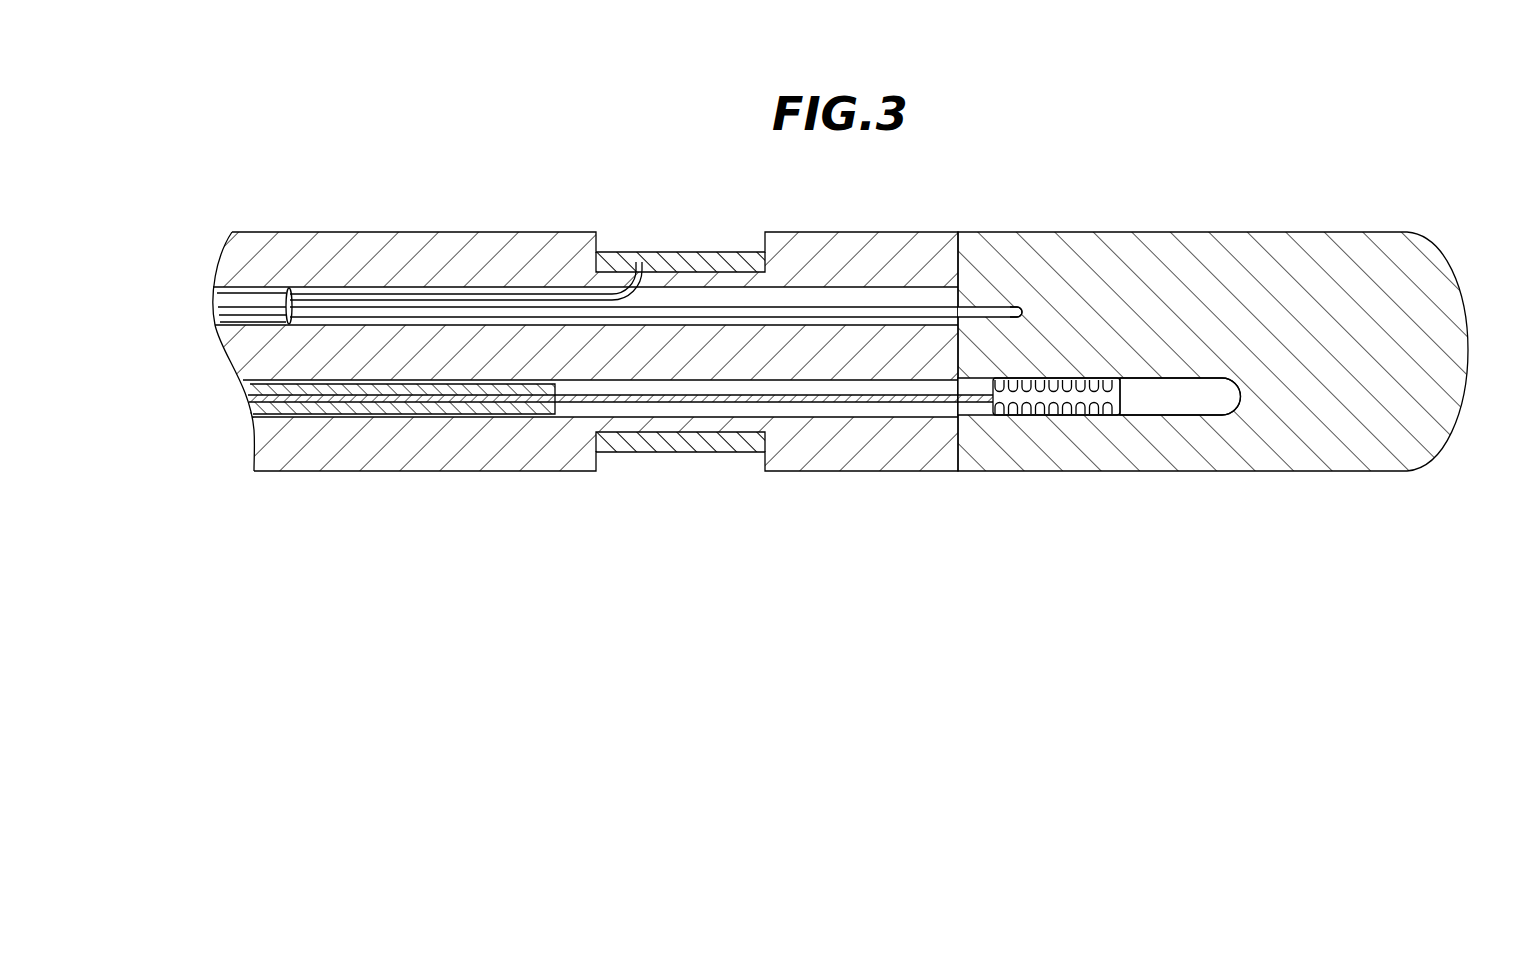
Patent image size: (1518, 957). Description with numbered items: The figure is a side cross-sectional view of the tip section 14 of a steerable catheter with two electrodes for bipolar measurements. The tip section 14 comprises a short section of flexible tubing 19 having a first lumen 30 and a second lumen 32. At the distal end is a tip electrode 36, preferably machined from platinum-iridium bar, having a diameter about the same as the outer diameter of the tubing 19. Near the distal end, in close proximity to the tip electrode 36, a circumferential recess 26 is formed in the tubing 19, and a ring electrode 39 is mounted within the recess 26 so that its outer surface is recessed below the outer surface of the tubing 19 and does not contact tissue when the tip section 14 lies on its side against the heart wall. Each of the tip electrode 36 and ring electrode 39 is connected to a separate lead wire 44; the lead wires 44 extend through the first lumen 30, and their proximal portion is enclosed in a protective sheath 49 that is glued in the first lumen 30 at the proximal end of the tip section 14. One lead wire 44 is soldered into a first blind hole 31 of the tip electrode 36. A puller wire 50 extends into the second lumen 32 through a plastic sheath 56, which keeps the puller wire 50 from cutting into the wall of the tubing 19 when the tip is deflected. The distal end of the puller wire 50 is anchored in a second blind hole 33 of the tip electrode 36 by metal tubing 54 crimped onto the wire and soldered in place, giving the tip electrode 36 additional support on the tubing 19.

The tip section 14 is at (410, 534).
The tubing 19 is at (433, 266).
The circumferential recess 26 is at (607, 265).
The first lumen 30 is at (363, 290).
The first blind hole 31 is at (1013, 300).
The second lumen 32 is at (578, 408).
The second blind hole 33 is at (1191, 397).
The tip electrode 36 is at (1284, 258).
The ring electrode 39 is at (663, 448).
The lead wire 44 is at (511, 305).
The protective sheath 49 is at (243, 302).
The puller wire 50 is at (898, 402).
The metal tubing 54 is at (1059, 397).
The sheath 56 is at (312, 407).